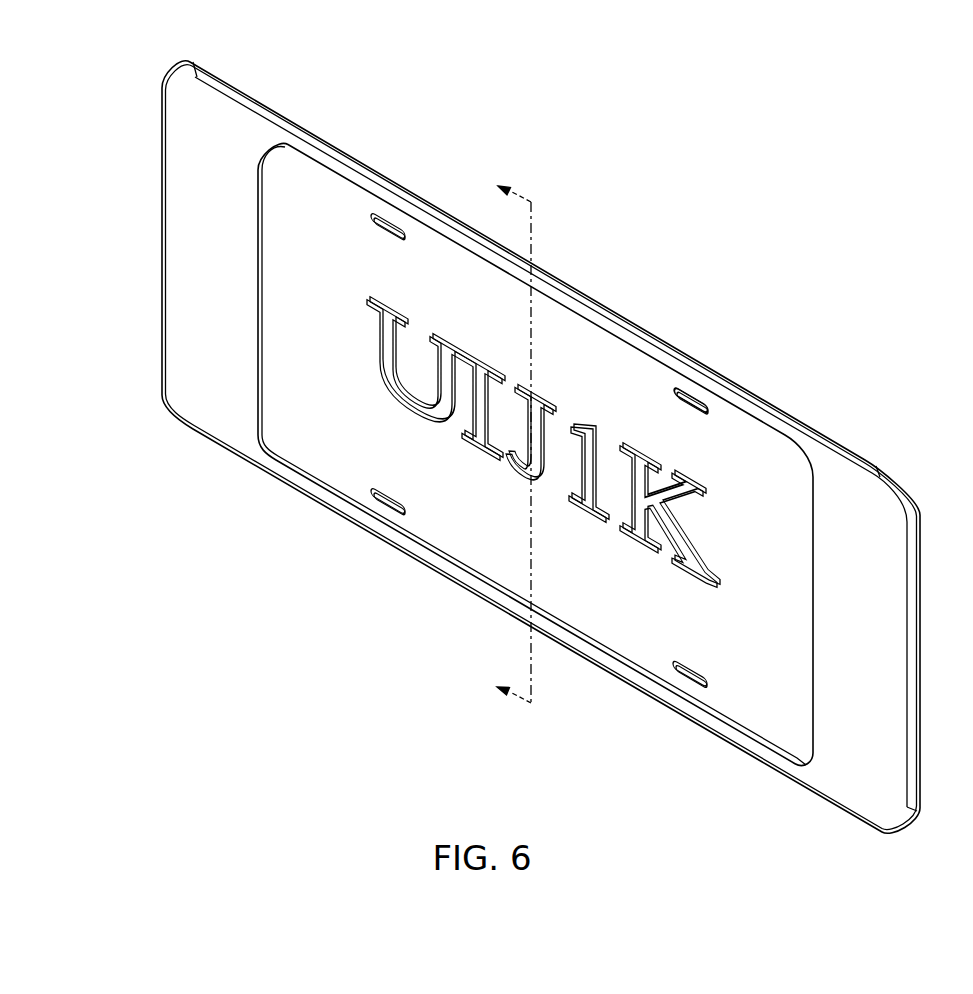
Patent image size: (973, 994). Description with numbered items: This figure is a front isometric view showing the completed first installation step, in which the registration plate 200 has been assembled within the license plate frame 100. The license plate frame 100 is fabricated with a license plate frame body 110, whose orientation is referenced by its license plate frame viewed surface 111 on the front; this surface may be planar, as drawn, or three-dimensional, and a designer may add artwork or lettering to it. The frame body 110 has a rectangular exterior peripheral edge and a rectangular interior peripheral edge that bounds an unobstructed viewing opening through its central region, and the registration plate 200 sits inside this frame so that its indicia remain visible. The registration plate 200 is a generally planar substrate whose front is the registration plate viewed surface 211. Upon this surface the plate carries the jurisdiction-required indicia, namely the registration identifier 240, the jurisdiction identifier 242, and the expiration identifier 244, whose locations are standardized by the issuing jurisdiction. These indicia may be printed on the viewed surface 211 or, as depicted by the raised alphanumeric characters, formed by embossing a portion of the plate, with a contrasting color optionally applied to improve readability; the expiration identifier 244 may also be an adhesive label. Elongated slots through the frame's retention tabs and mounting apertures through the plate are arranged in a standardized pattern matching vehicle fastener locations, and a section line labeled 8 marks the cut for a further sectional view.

The license plate frame 100 is at (128, 112).
The license plate frame body 110 is at (906, 832).
The license plate frame viewed surface 111 is at (213, 236).
The registration plate 200 is at (325, 422).
The registration plate viewed surface 211 is at (330, 325).
The registration identifier 240 is at (528, 440).
The jurisdiction identifier 242 is at (506, 567).
The expiration identifier 244 is at (762, 467).
The section line 8- 8 is at (504, 438).